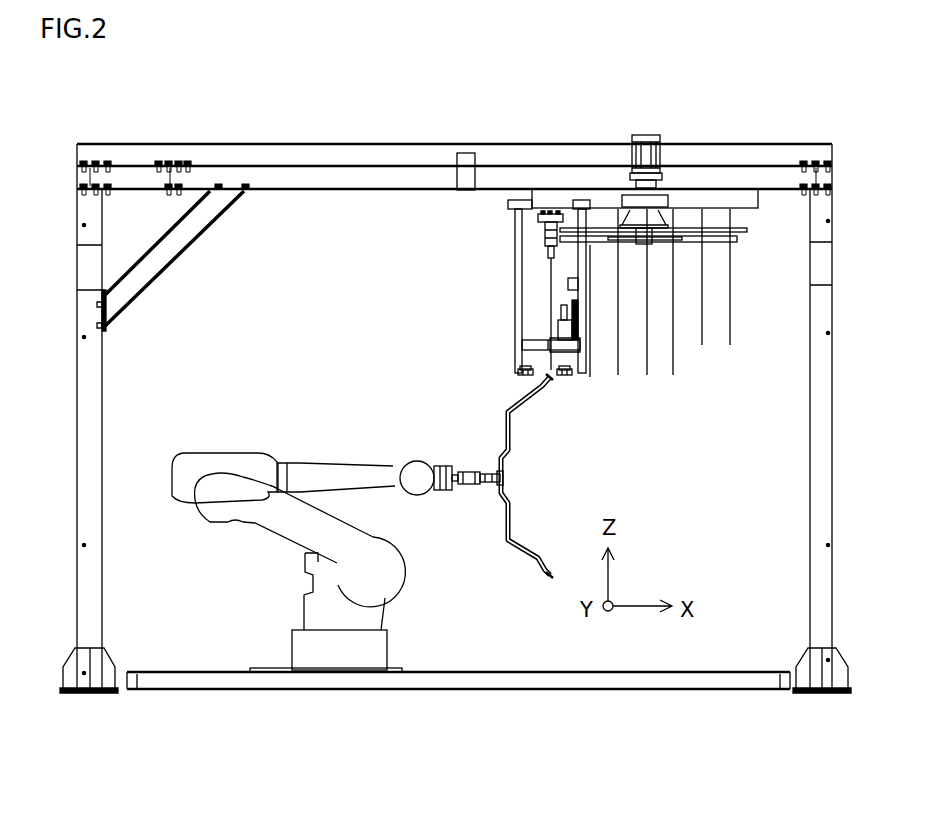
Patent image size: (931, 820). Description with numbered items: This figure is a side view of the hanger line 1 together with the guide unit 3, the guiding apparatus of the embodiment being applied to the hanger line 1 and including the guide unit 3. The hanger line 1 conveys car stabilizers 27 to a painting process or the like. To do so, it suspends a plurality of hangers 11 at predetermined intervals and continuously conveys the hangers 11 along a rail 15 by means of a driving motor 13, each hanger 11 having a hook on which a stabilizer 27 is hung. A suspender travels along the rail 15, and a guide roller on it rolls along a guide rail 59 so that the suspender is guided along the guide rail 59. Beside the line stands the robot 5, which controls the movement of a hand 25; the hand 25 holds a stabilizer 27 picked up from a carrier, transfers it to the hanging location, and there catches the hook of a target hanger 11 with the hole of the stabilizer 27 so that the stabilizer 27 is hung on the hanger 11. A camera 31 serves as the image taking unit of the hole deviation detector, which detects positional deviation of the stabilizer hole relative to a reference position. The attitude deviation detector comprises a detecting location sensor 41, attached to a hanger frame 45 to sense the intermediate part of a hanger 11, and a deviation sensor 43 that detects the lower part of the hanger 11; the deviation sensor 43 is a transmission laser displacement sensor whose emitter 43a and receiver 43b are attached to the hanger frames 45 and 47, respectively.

The hanger line 1 is at (786, 216).
The guide unit 3 is at (568, 350).
The robot 5 is at (237, 452).
The hanger 11 is at (557, 312).
The driving motor 13 is at (647, 134).
The rail 15 is at (552, 213).
The hand 25 is at (466, 485).
The stabilizer 27 is at (502, 424).
The camera 31 is at (470, 152).
The detecting location sensor 41 is at (568, 284).
The deviation sensor 43 is at (557, 388).
The emitter 43a is at (572, 383).
The receiver 43b is at (517, 370).
The hanger frame 45 is at (588, 336).
The hanger frame 47 is at (558, 302).
The guide rail 59 is at (540, 231).